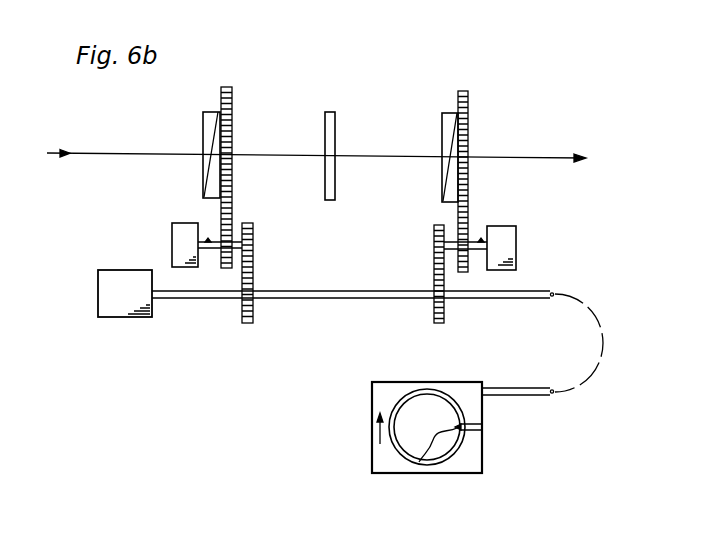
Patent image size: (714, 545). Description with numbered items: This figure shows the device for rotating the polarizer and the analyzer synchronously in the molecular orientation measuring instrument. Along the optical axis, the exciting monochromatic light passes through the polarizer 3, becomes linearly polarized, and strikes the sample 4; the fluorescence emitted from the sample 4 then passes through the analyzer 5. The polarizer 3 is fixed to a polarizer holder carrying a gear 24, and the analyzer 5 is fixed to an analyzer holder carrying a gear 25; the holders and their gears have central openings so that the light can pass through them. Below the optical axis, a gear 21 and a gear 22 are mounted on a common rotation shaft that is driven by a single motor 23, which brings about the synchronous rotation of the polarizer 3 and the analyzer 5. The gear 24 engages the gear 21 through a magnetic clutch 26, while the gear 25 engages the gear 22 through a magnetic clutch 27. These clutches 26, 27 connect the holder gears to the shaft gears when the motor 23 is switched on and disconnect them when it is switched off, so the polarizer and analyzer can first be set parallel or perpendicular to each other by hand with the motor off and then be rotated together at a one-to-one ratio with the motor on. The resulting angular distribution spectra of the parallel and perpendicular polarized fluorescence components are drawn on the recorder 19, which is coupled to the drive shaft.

The polarizer 3 is at (208, 110).
The sample 4 is at (332, 110).
The analyzer 5 is at (448, 114).
The recorder 19 is at (392, 466).
The gear 21 is at (247, 325).
The gear 22 is at (442, 325).
The motor 23 is at (118, 318).
The gear 24 is at (228, 86).
The gear 25 is at (468, 91).
The magnetic clutch 26 is at (175, 237).
The magnetic clutch 27 is at (512, 242).